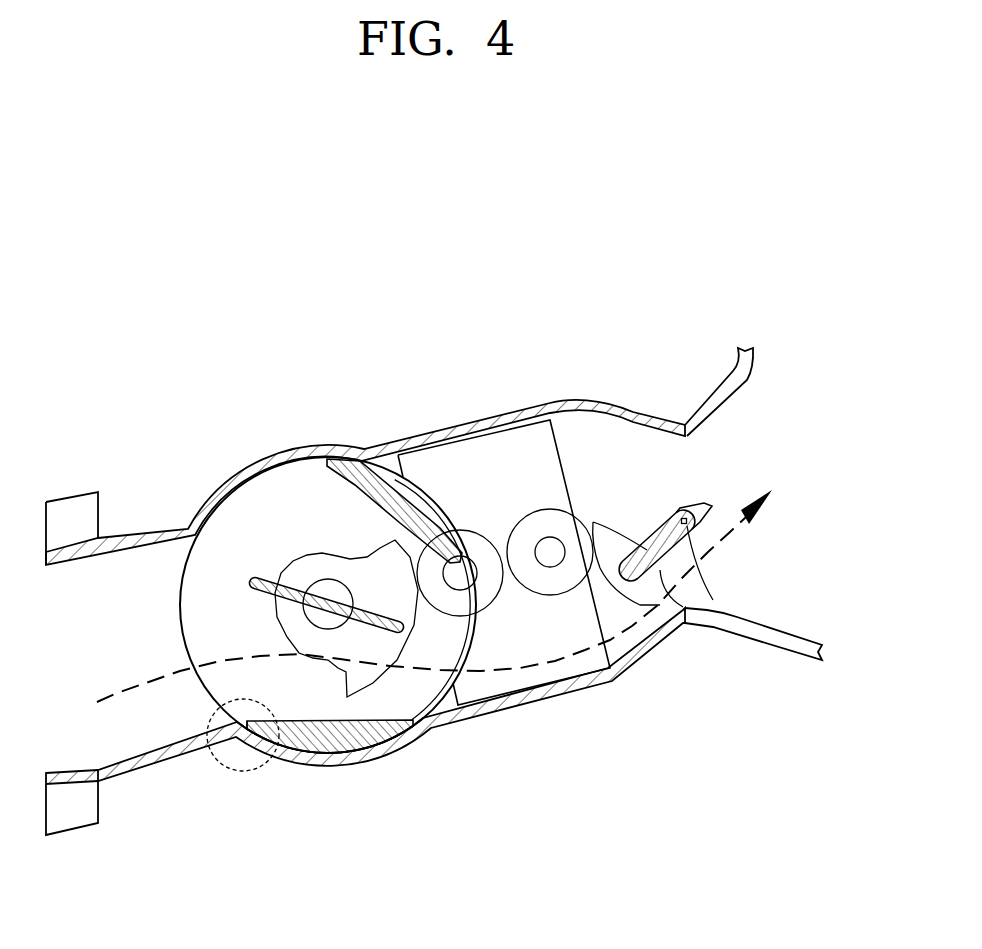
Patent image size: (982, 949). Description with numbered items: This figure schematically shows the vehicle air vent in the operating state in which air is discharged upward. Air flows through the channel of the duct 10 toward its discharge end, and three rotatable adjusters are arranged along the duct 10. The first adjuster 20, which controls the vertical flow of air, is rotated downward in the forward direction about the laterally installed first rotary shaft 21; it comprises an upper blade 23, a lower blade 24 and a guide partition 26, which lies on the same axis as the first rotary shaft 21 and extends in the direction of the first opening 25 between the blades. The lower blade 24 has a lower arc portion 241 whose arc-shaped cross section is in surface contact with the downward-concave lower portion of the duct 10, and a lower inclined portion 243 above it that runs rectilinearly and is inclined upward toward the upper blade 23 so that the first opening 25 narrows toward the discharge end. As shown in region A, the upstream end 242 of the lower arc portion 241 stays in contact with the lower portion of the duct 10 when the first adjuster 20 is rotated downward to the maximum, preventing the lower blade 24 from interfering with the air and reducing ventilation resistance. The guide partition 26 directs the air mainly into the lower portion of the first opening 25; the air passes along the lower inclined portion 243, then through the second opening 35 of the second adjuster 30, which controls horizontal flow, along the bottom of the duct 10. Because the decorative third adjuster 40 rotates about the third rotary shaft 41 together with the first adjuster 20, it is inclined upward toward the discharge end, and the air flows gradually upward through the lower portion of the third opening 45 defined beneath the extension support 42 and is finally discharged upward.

The duct 10 is at (570, 384).
The first adjuster 20 is at (388, 452).
The first rotary shaft 21 is at (317, 576).
The upper blade 23 is at (358, 457).
The lower blade 24 is at (312, 760).
The lower arc portion 241 is at (337, 752).
The upstream end 242 is at (268, 755).
The lower inclined portion 243 is at (370, 753).
The first opening 25 is at (413, 690).
The guide partition 26 is at (258, 581).
The second adjuster 30 is at (574, 694).
The second opening 35 is at (546, 637).
The third adjuster 40 is at (679, 486).
The third rotary shaft 41 is at (713, 600).
The extension support 42 is at (658, 515).
The third opening 45 is at (692, 565).
The region A is at (221, 766).